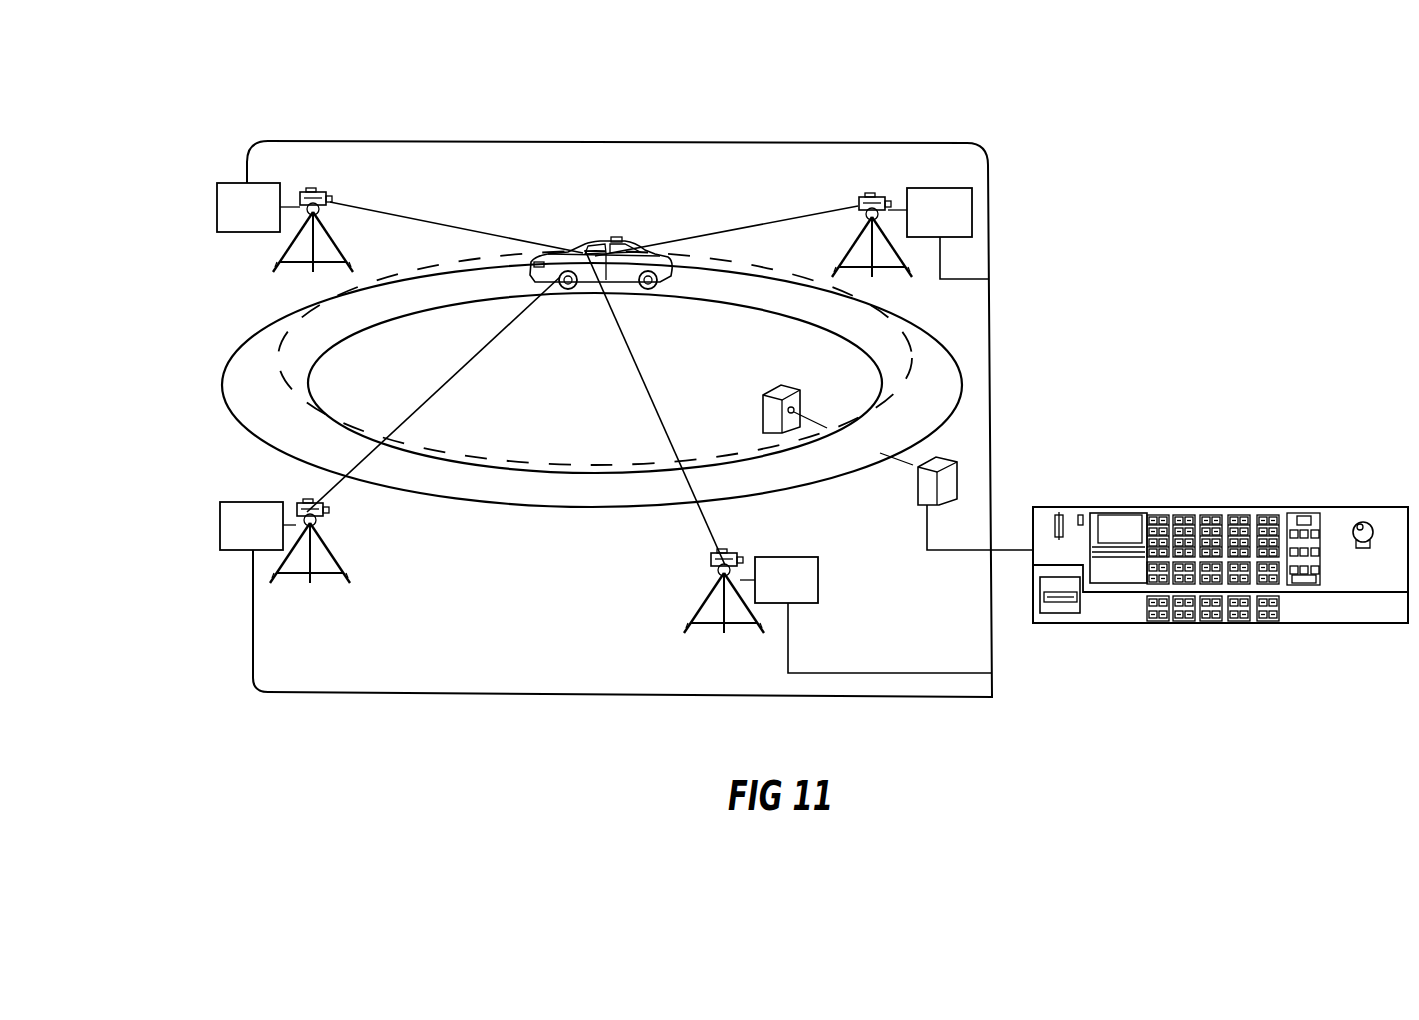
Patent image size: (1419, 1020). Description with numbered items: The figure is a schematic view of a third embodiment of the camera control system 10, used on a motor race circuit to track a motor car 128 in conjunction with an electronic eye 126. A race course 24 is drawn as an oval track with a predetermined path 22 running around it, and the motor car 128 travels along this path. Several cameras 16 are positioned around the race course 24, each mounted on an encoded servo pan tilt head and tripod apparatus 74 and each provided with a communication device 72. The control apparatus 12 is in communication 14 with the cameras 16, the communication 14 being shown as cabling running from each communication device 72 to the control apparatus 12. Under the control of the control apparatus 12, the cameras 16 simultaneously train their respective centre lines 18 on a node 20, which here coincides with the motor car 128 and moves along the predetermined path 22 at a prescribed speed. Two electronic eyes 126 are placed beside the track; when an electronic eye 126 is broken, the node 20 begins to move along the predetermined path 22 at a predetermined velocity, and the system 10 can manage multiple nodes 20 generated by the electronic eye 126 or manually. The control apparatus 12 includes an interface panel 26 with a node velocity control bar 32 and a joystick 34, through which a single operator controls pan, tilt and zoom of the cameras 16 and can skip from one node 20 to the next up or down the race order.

The camera control system 10 is at (1247, 101).
The control apparatus 12 is at (1234, 404).
The communication 14 is at (990, 252).
The cameras 16 is at (318, 196).
The centre line 18 is at (494, 235).
The node 20 is at (580, 252).
The predetermined path 22 is at (563, 462).
The race course 24 is at (250, 378).
The interface panel 26 is at (1340, 510).
The node velocity control bar 32 is at (1118, 552).
The joystick 34 is at (1362, 545).
The communication device 72 is at (231, 213).
The encoded servo pan tilt head and tripod apparatus 74 is at (325, 522).
The electronic eye 126 is at (766, 412).
The motor car 128 is at (617, 250).